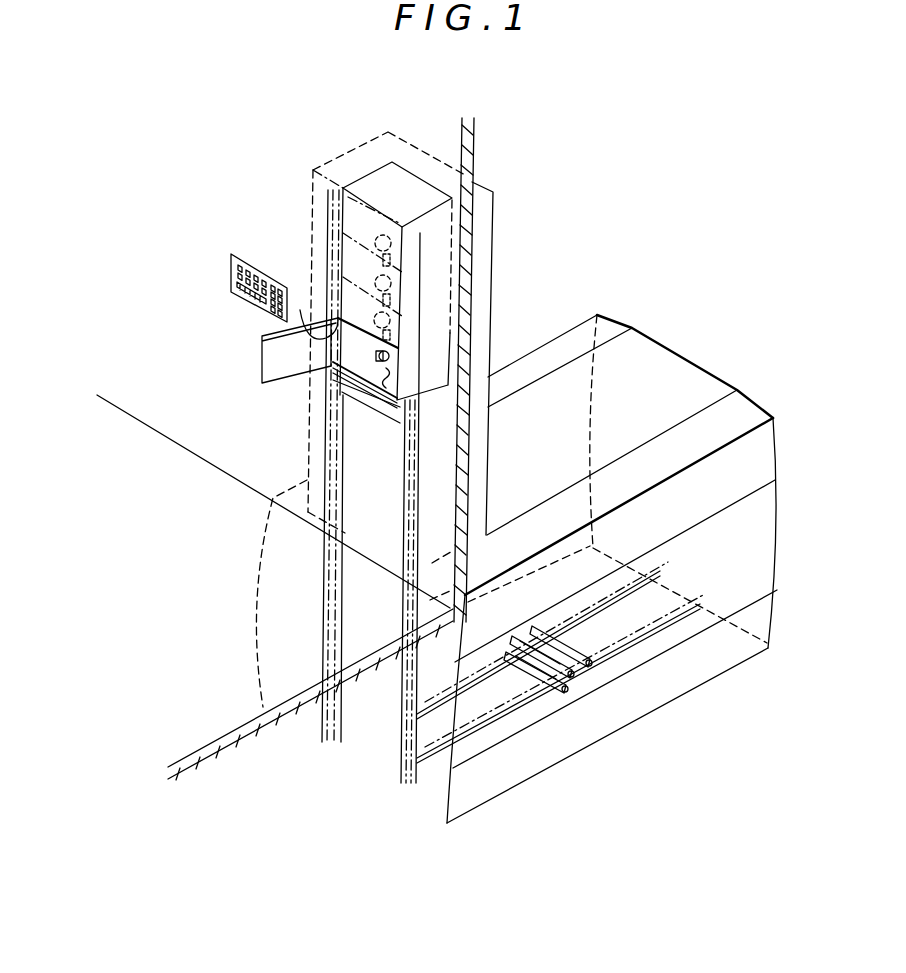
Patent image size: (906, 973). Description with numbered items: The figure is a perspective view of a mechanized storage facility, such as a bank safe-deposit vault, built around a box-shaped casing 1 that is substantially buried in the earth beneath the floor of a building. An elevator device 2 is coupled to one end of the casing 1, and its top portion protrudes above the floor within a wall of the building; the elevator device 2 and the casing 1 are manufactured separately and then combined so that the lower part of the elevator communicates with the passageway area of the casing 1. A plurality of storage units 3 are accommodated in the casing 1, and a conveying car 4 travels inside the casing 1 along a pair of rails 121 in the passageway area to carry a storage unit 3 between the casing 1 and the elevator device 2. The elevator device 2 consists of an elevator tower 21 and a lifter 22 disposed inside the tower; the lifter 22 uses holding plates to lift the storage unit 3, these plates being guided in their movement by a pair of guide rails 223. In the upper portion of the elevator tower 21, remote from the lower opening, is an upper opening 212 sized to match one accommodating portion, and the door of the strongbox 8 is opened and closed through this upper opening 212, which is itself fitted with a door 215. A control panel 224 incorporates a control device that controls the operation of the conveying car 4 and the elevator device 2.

The casing 1 is at (677, 355).
The elevator device 2 is at (495, 233).
The elevator tower 21 is at (484, 283).
The lifter 22 is at (368, 404).
The guide rails 223 is at (403, 787).
The storage unit 3 is at (388, 177).
The strongbox 8 is at (360, 355).
The upper opening 212 is at (300, 310).
The door 215 is at (272, 363).
The control panel 224 is at (230, 273).
The rails 121 is at (699, 604).
The conveying car 4 is at (536, 675).